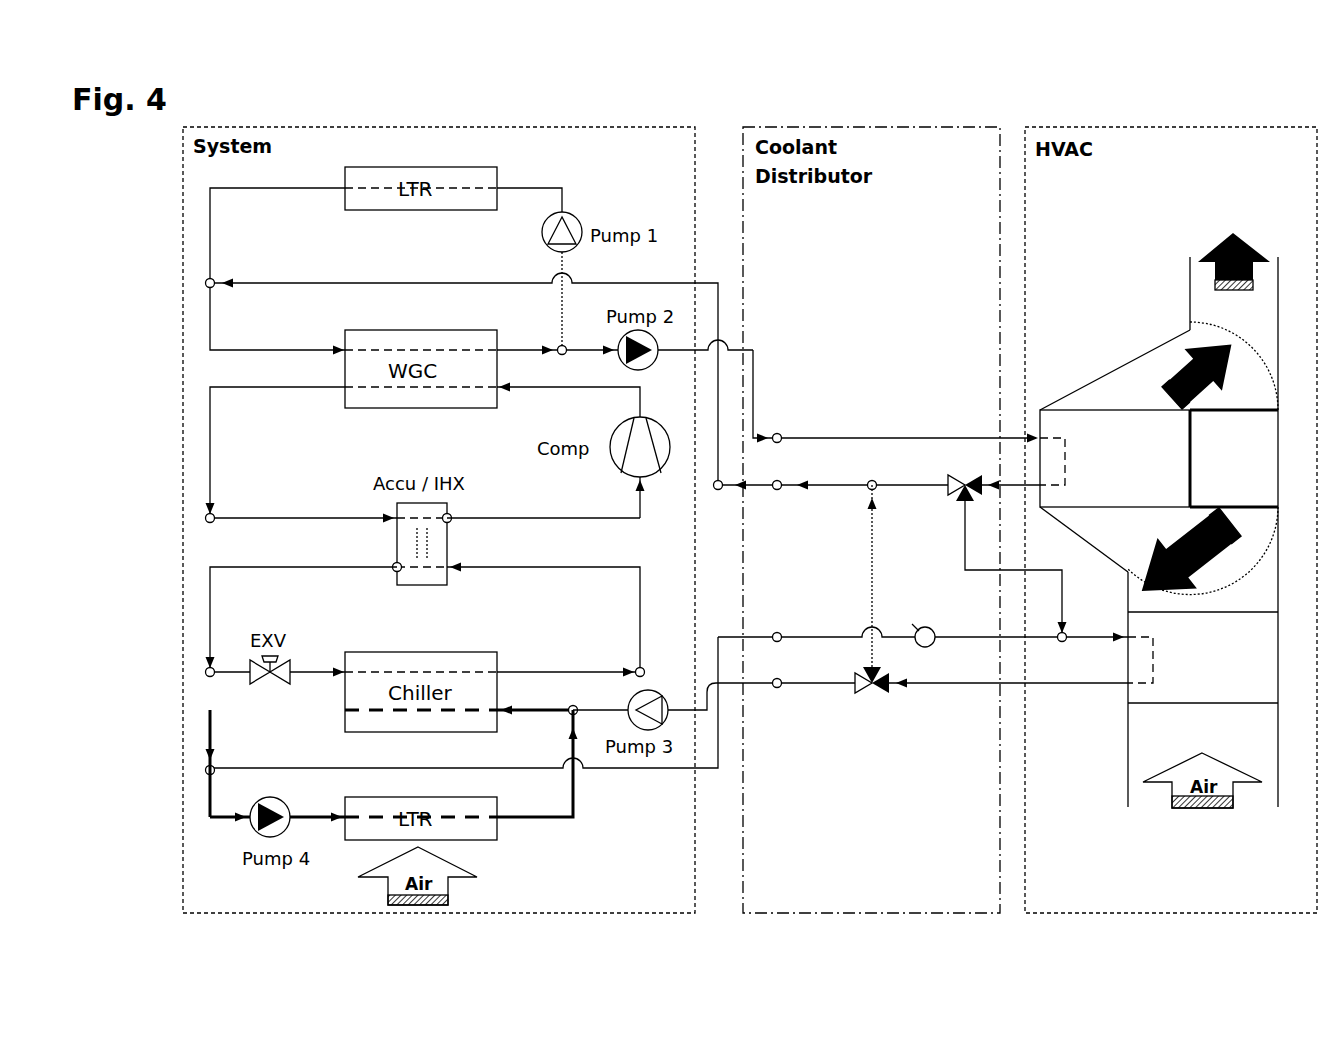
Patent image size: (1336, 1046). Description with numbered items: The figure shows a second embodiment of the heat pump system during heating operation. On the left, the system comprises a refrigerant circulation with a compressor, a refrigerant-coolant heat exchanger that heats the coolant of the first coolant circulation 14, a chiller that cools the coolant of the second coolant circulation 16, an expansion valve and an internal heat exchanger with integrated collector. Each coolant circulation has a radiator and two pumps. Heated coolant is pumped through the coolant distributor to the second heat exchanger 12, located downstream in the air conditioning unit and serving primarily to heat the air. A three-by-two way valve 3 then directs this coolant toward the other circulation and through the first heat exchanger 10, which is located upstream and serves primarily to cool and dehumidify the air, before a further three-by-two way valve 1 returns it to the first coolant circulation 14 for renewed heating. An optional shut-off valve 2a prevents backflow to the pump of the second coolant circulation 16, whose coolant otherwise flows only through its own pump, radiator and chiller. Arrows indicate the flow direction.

The first heat exchanger 10 is at (1264, 646).
The second heat exchanger 12 is at (1172, 449).
The first coolant circulation 14 is at (770, 360).
The second coolant circulation 16 is at (753, 738).
The 3/2 way valve 1 is at (991, 694).
The shut-off valve 2a is at (923, 621).
The 3/2 way valve 3 is at (1007, 543).